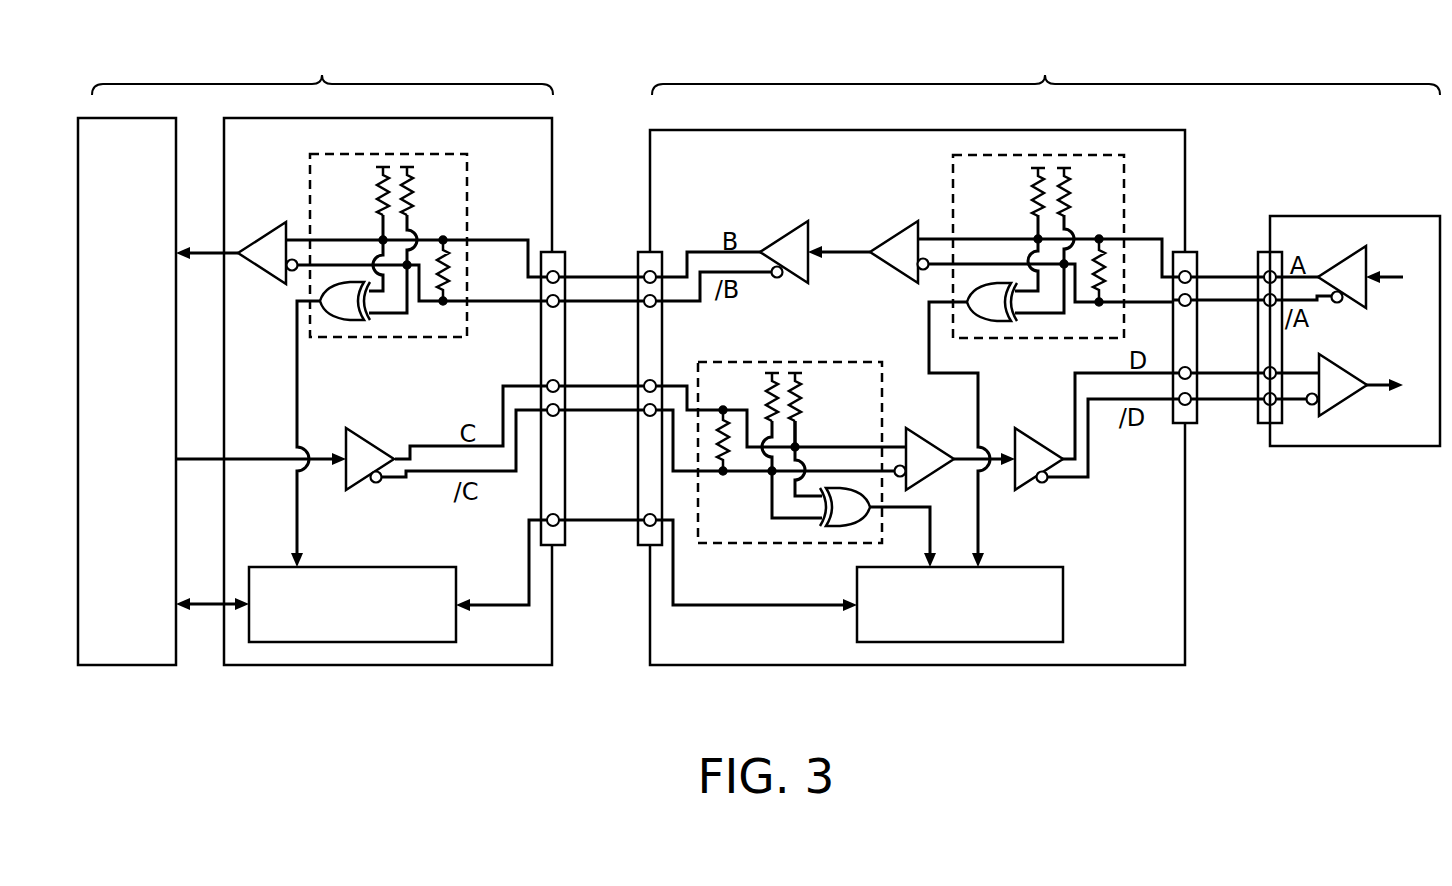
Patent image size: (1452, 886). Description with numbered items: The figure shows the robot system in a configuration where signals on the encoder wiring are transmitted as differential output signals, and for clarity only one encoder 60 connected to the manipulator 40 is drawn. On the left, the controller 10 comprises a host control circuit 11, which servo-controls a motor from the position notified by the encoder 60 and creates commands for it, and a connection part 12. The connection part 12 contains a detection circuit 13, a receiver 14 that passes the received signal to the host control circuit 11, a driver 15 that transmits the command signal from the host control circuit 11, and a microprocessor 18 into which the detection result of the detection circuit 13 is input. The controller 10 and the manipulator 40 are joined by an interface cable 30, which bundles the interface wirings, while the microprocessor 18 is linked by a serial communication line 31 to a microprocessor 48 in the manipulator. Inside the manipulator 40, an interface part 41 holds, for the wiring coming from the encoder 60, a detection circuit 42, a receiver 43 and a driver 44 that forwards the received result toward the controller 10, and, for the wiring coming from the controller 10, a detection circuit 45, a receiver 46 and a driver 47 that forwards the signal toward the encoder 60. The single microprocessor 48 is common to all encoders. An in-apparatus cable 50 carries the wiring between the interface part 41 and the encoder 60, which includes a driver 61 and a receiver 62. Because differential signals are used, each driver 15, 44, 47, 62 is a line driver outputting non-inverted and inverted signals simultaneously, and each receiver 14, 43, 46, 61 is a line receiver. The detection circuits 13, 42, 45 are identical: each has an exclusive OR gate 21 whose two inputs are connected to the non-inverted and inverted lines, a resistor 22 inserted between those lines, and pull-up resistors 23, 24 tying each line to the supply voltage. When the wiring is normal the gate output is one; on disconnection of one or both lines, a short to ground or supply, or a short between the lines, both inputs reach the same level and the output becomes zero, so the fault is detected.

The controller 10 is at (322, 53).
The host control circuit 11 is at (137, 665).
The connection part 12 is at (253, 665).
The detection circuit 13 is at (308, 170).
The receiver 14 is at (272, 241).
The driver 15 is at (368, 448).
The microprocessor 18 is at (400, 568).
The exclusive OR gate 21 is at (345, 322).
The resistor 22 is at (452, 265).
The pull-up resistor 23 is at (378, 192).
The pull-up resistor 24 is at (418, 197).
The interface cable 30 is at (597, 262).
The serial communication line 31 is at (598, 537).
The manipulator 40 is at (1046, 53).
The interface part 41 is at (738, 665).
The detection circuit 42 is at (955, 175).
The receiver 43 is at (895, 242).
The driver 44 is at (800, 238).
The detection circuit 45 is at (838, 365).
The receiver 46 is at (920, 445).
The driver 47 is at (1025, 443).
The microprocessor 48 is at (1058, 600).
The in-apparatus cable 50 is at (1227, 262).
The encoder 60 is at (1336, 446).
The driver 61 is at (1340, 375).
The receiver 62 is at (1365, 257).